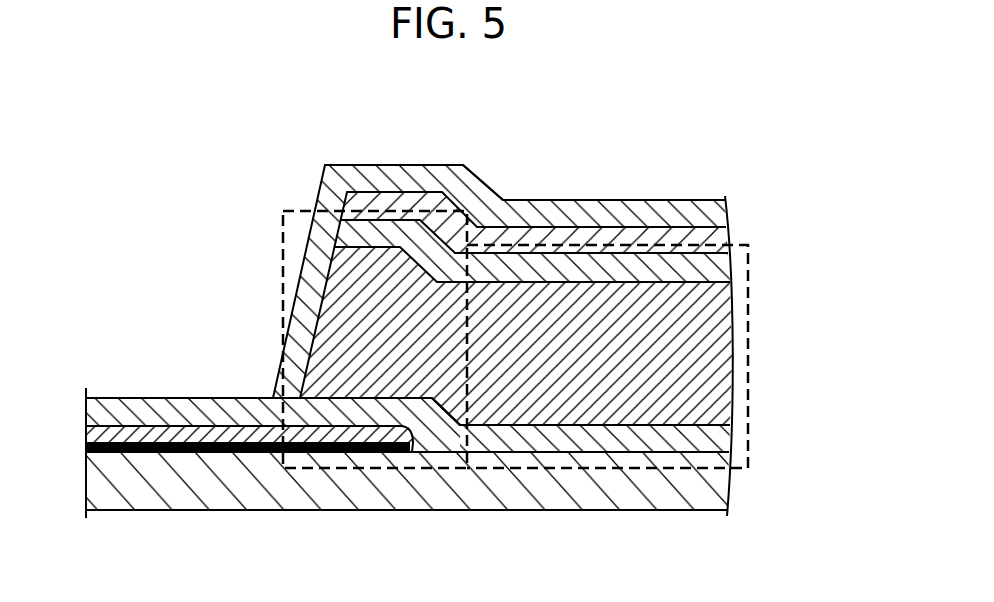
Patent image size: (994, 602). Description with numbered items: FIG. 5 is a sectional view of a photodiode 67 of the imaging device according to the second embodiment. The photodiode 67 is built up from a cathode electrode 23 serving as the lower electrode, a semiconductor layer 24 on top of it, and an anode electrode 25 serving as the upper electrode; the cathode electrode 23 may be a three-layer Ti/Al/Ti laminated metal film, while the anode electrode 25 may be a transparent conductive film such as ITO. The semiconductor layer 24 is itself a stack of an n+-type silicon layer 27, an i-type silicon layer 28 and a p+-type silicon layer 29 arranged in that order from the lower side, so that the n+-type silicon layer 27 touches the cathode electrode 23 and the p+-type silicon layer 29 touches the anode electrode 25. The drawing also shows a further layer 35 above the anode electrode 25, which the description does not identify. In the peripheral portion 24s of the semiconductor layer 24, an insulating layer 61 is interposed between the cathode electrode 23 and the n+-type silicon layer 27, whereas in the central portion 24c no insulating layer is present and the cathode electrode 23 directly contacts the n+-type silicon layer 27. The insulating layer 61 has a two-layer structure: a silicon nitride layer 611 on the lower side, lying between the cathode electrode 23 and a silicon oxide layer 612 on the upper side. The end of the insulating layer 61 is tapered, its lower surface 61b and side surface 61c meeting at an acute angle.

The cathode electrode 23 is at (142, 482).
The semiconductor layer 24 is at (479, 337).
The peripheral portion of the semiconductor layer 24s is at (447, 468).
The central portion of the semiconductor layer 24c is at (595, 468).
The anode electrode 25 is at (642, 240).
The n+-type silicon layer 27 is at (455, 426).
The i-type silicon layer 28 is at (712, 360).
The p+-type silicon layer 29 is at (710, 273).
The insulating film 35 is at (695, 212).
The insulating layer 61 is at (248, 410).
The silicon nitride layer 611 is at (158, 447).
The silicon oxide layer 612 is at (134, 432).
The lower surface of the insulating layer 61b is at (240, 453).
The side surface of the insulating layer 61c is at (433, 398).
The photodiode 67 is at (555, 162).